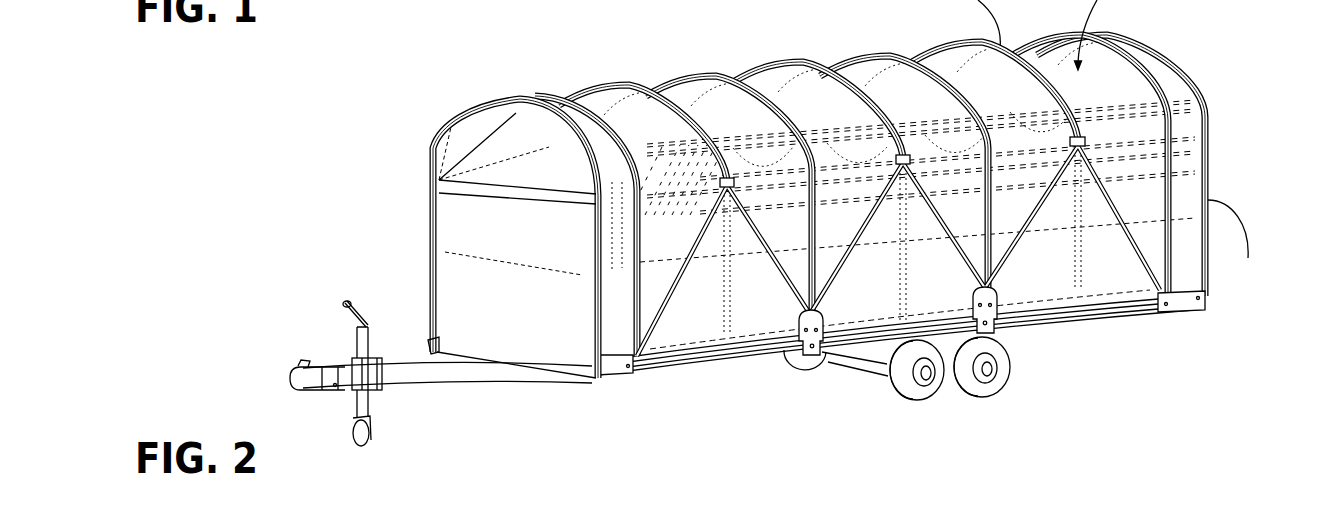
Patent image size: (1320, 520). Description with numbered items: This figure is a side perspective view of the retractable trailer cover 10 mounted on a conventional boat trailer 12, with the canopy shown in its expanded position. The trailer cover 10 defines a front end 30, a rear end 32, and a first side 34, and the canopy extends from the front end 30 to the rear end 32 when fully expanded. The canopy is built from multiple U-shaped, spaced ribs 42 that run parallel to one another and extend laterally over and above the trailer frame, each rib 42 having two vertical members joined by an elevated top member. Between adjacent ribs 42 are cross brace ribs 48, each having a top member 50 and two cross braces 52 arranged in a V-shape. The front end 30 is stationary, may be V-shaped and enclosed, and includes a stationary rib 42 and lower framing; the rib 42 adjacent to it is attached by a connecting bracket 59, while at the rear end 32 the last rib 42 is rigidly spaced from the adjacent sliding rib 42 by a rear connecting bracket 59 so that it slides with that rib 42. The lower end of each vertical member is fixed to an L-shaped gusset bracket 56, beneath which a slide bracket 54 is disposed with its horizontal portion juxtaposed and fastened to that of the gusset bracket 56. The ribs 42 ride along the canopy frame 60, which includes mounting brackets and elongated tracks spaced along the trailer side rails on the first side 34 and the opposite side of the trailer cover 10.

The retractable trailer cover 10 is at (530, 92).
The boat trailer 12 is at (437, 384).
The front end 30 is at (440, 227).
The rear end 32 is at (1248, 257).
The first side 34 is at (757, 318).
The rib 42 is at (1175, 62).
The cross brace rib 48 is at (662, 83).
The top member 50 is at (838, 65).
The cross brace 52 is at (735, 228).
The slide bracket 54 is at (810, 347).
The gusset bracket 56 is at (982, 78).
The connecting bracket 59 is at (613, 373).
The canopy frame 60 is at (1100, 320).